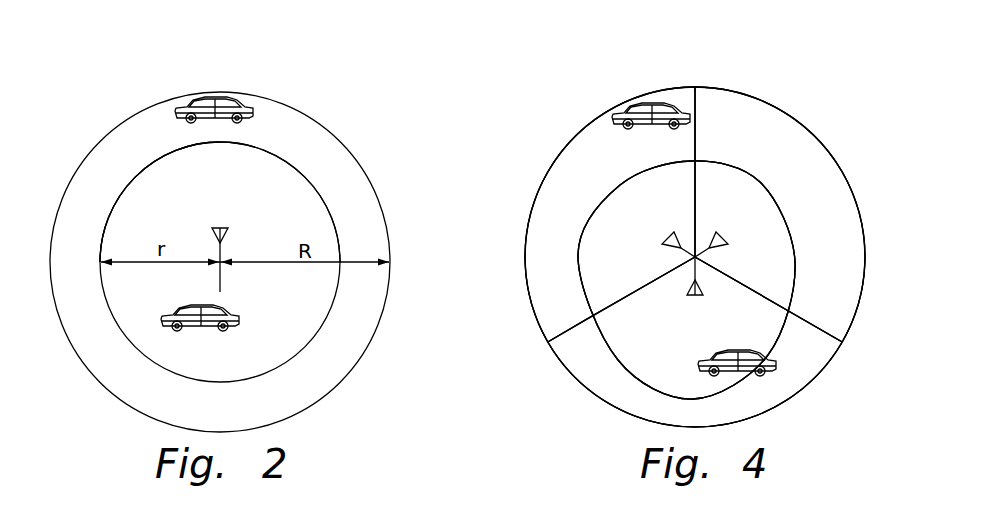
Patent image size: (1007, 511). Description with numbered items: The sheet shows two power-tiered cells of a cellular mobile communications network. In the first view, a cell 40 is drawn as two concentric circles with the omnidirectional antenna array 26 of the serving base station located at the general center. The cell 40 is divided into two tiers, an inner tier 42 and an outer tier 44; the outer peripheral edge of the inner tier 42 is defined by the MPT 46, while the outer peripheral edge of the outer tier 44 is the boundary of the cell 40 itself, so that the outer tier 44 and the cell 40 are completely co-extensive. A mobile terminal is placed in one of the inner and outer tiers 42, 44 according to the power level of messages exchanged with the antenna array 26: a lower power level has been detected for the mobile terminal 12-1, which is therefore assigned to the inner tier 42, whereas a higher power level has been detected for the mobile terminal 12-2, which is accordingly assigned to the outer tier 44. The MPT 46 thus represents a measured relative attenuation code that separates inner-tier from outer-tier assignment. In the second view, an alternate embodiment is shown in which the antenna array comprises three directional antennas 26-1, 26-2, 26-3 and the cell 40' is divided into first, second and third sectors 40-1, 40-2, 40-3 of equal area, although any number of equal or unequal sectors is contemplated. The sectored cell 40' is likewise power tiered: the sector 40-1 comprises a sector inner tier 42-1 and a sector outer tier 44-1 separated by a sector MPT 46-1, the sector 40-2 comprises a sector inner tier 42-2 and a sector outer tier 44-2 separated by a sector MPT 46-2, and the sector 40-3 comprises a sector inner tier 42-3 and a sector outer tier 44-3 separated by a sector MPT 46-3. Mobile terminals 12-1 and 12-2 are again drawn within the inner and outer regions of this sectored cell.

In FIG. 2, the mobile terminal 12-1 is at (204, 327).
In FIG. 4, the mobile terminal 12-1 is at (700, 366).
In FIG. 2, the mobile terminal 12-2 is at (208, 100).
In FIG. 4, the mobile terminal 12-2 is at (645, 107).
In FIG. 2, the omnidirectional antenna array 26 is at (224, 278).
In FIG. 4, the directional antenna 26-1 is at (700, 236).
In FIG. 4, the directional antenna 26-2 is at (704, 285).
In FIG. 4, the directional antenna 26-3 is at (670, 256).
In FIG. 2, the cell 40 is at (220, 240).
In FIG. 4, the sectored cell 40' is at (695, 228).
In FIG. 4, the first sector 40-1 is at (838, 128).
In FIG. 4, the second sector 40-2 is at (608, 404).
In FIG. 4, the third sector 40-3 is at (527, 285).
In FIG. 2, the inner tier 42 is at (288, 172).
In FIG. 4, the sector inner tier 42-1 is at (794, 257).
In FIG. 4, the sector inner tier 42-2 is at (576, 318).
In FIG. 4, the sector inner tier 42-3 is at (590, 204).
In FIG. 2, the outer tier 44 is at (148, 112).
In FIG. 4, the sector outer tier 44-1 is at (710, 92).
In FIG. 4, the sector outer tier 44-2 is at (566, 366).
In FIG. 4, the sector outer tier 44-3 is at (528, 258).
In FIG. 2, the MPT 46 is at (140, 174).
In FIG. 4, the sector MPT 46-1 is at (745, 148).
In FIG. 4, the sector MPT 46-2 is at (790, 384).
In FIG. 4, the sector MPT 46-3 is at (608, 177).